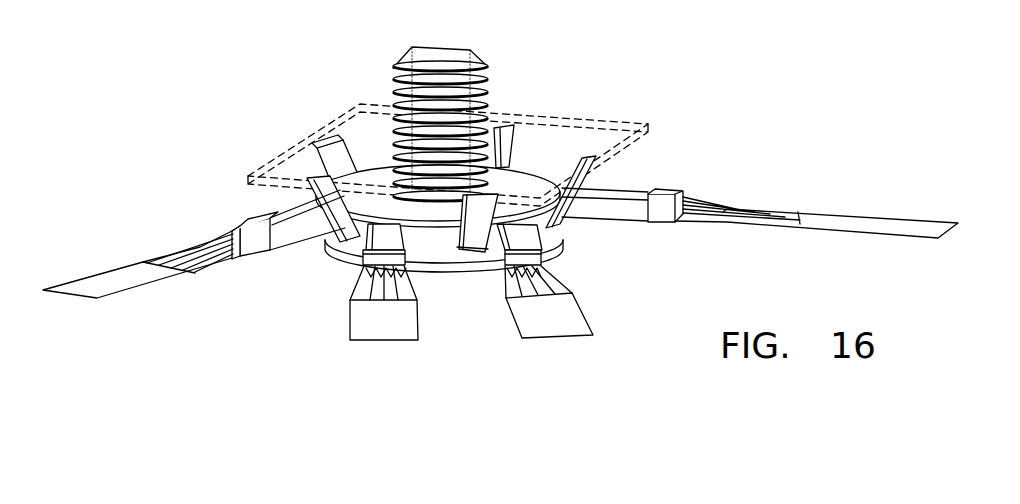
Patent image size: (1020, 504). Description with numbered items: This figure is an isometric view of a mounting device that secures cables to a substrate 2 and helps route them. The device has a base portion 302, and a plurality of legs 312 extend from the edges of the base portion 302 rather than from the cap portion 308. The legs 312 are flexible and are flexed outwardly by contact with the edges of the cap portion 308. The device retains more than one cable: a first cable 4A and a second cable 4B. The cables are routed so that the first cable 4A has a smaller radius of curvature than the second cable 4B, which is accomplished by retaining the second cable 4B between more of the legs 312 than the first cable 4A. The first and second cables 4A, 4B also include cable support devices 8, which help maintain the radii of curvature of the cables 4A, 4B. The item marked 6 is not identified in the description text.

The substrate 2 is at (574, 118).
The rotating disc 6 is at (500, 192).
The cable support device 8 is at (277, 213).
The first cable 4A is at (888, 223).
The second cable 4B is at (594, 322).
The base portion 302 is at (430, 278).
The cap portion 308 is at (568, 294).
The plurality of legs 312 is at (322, 138).